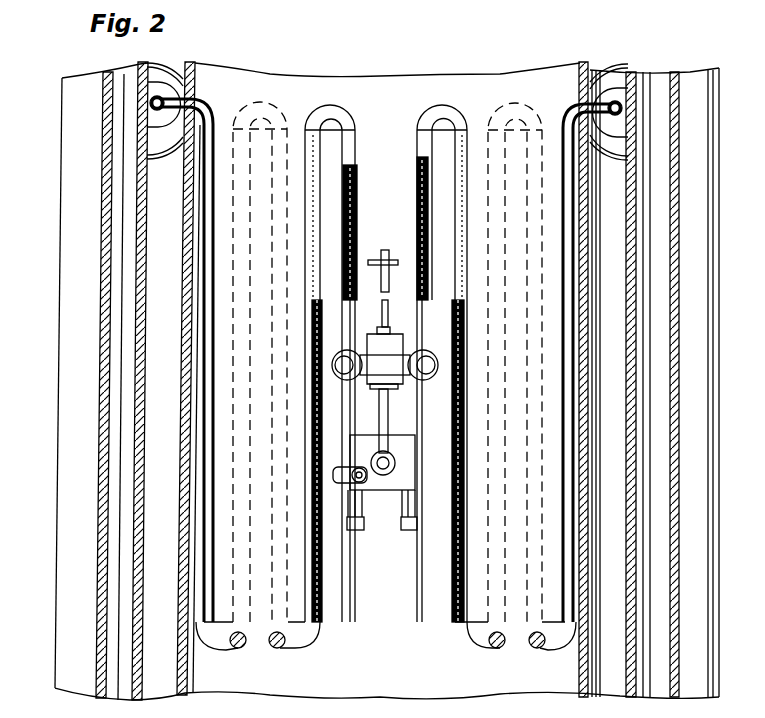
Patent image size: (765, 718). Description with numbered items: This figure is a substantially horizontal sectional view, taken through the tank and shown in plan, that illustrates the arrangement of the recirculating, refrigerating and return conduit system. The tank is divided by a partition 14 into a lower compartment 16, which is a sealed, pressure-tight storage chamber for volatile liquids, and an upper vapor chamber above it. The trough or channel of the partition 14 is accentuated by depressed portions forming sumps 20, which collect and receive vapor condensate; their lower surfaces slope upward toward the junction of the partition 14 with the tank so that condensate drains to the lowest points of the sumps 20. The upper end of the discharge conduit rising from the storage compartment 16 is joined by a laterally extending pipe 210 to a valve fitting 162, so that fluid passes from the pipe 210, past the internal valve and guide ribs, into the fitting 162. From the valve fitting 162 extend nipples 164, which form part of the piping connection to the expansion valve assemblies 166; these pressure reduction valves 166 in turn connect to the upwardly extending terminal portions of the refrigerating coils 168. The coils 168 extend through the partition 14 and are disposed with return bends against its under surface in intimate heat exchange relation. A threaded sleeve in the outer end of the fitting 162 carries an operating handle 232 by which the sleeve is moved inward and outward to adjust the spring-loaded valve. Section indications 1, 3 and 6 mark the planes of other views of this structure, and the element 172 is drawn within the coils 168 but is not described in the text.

The partition 14 is at (187, 680).
The lower compartment 16 is at (400, 690).
The sumps 20 is at (181, 62).
The valve fitting 162 is at (372, 342).
The nipples 164 is at (357, 382).
The expansion valve assemblies 166 is at (434, 364).
The refrigerating coils 168 is at (420, 115).
The heating element 172 is at (418, 196).
The laterally extending pipe 210 is at (388, 487).
The operating handle 232 is at (400, 258).
The section line 1- 1 is at (20, 683).
The section line 3- 3 is at (300, 550).
The section line 6- 6 is at (385, 300).